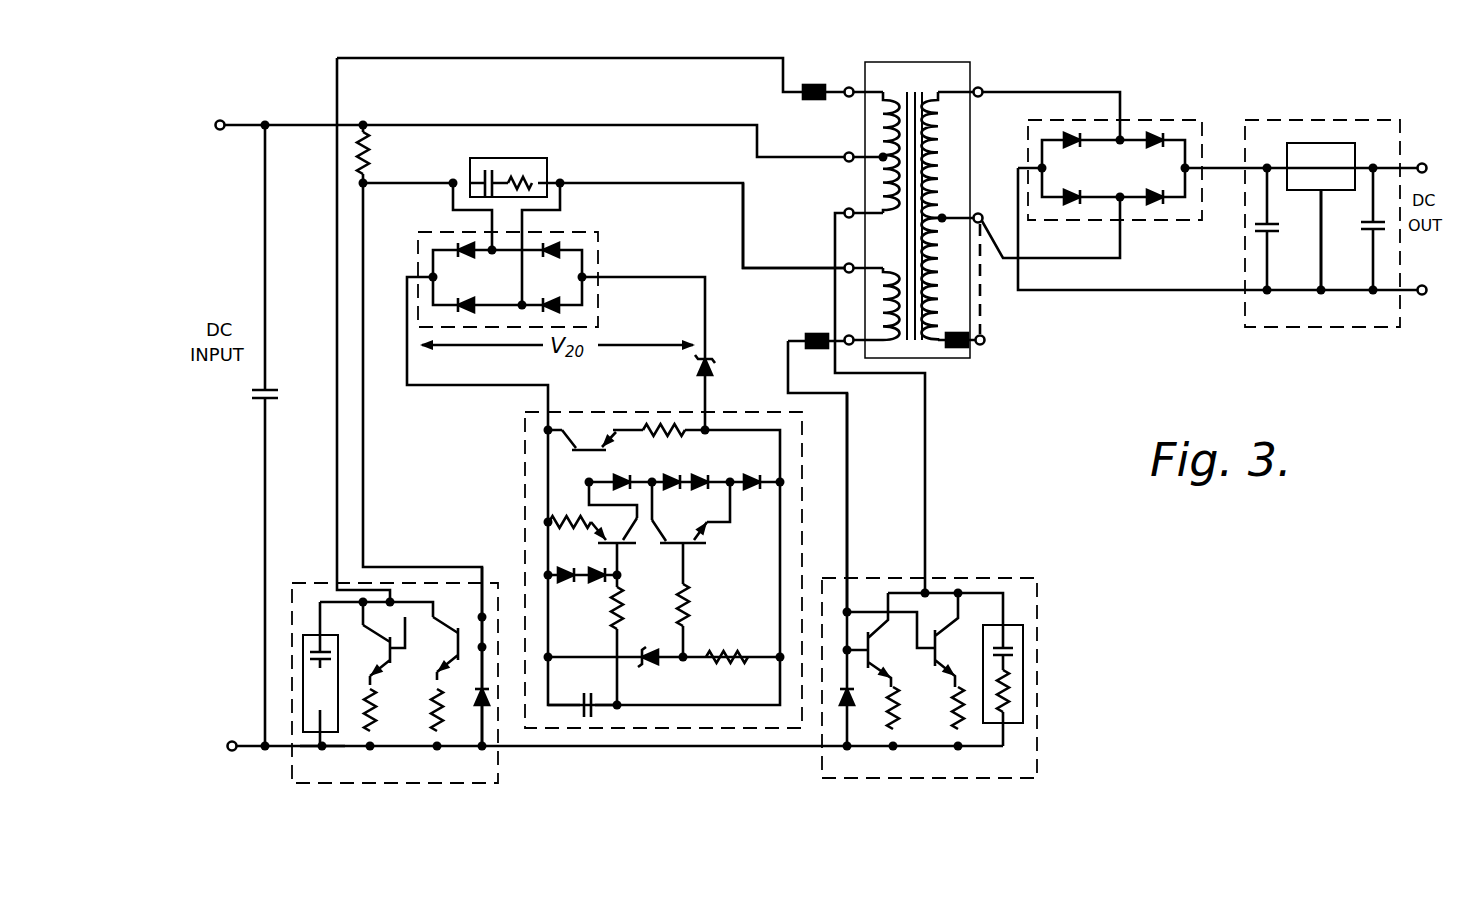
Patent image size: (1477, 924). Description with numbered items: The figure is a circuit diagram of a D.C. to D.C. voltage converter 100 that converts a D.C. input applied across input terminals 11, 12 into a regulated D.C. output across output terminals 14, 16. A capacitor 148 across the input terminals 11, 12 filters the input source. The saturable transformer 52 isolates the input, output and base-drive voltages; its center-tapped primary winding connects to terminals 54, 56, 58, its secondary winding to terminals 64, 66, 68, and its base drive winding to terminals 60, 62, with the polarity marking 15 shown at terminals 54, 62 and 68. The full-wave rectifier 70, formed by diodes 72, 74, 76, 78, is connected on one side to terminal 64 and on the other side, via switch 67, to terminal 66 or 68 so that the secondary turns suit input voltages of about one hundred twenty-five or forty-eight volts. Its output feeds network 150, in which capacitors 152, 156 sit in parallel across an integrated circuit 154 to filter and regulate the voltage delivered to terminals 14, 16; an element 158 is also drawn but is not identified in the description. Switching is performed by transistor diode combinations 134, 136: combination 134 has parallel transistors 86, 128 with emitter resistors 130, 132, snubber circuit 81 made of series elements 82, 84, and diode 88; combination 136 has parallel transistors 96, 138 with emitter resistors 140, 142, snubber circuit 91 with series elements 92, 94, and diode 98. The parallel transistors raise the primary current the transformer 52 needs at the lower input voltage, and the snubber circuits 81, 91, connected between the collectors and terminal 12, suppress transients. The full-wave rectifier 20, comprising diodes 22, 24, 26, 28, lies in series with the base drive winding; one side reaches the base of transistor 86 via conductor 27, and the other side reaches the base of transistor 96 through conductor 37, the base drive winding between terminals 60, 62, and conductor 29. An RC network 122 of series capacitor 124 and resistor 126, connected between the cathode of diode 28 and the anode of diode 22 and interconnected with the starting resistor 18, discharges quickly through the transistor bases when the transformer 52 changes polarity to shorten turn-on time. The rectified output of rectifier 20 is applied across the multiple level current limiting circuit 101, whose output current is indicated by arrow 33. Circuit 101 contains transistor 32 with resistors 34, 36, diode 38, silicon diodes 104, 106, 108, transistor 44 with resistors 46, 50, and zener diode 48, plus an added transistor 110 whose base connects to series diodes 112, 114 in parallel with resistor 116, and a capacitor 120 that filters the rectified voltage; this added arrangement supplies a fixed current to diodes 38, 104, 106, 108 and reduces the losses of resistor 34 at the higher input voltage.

The input terminal 11 is at (212, 138).
The input terminal 12 is at (224, 757).
The output terminal 14 is at (1426, 148).
The polarity marking 15 is at (812, 100).
The output terminal 16 is at (1422, 296).
The starting resistor 18 is at (368, 160).
The full-wave rectifier 20 is at (598, 240).
The diode 22 is at (474, 258).
The diode 24 is at (551, 259).
The diode 26 is at (476, 297).
The conductor 27 is at (404, 185).
The diode 28 is at (560, 309).
The conductor 29 is at (850, 482).
The first transistor 32 is at (592, 438).
The arrow 33 is at (712, 364).
The first resistor 34 is at (570, 516).
The second resistor 36 is at (664, 444).
The conductor 37 is at (796, 266).
The first diode 38 is at (618, 472).
The second transistor 44 is at (704, 556).
The third resistor 46 is at (688, 615).
The third zener diode 48 is at (656, 666).
The fourth resistor 50 is at (722, 665).
The saturable transformer 52 is at (970, 62).
The primary winding terminal 54 is at (849, 86).
The primary winding terminal 56 is at (849, 151).
The primary winding terminal 58 is at (849, 207).
The base drive winding terminal 60 is at (849, 262).
The base drive winding terminal 62 is at (849, 334).
The secondary winding terminal 64 is at (980, 98).
The secondary winding tap terminal 66 is at (981, 212).
The switch 67 is at (988, 232).
The secondary winding terminal 68 is at (984, 346).
The full-wave rectifier 70 is at (1150, 120).
The diode 72 is at (1070, 150).
The diode 74 is at (1153, 150).
The diode 76 is at (1072, 206).
The diode 78 is at (1148, 206).
The snubber circuit 81 is at (312, 635).
The resistor 82 is at (325, 650).
The capacitor 84 is at (326, 720).
The transistor 86 is at (454, 642).
The diode 88 is at (473, 700).
The snubber circuit 91 is at (1023, 628).
The resistor 92 is at (1013, 652).
The capacitor 94 is at (1010, 690).
The transistor 96 is at (874, 652).
The diode 98 is at (858, 700).
The D.C. to D.C. voltage converter 100 is at (1212, 92).
The multiple level current limiting circuit 101 is at (618, 412).
The silicon-type diode 104 is at (670, 470).
The silicon-type diode 106 is at (704, 470).
The silicon-type diode 108 is at (752, 490).
The transistor 110 is at (667, 572).
The diode 112 is at (570, 565).
The diode 114 is at (600, 586).
The resistor 116 is at (622, 610).
The capacitor 120 is at (598, 692).
The RC network 122 is at (529, 160).
The capacitor 124 is at (468, 162).
The resistor 126 is at (547, 172).
The transistor 128 is at (386, 650).
The emitter resistor 130 is at (376, 710).
The emitter resistor 132 is at (430, 714).
The transistor diode combination 134 is at (496, 580).
The transistor diode combination 136 is at (1037, 590).
The transistor 138 is at (938, 652).
The emitter resistor 140 is at (898, 698).
The emitter resistor 142 is at (952, 722).
The capacitor 148 is at (282, 394).
The network 150 is at (1290, 330).
The capacitor 152 is at (1280, 230).
The integrated circuit 154 is at (1339, 182).
The capacitor 156 is at (1360, 226).
The conductor 158 is at (1321, 262).